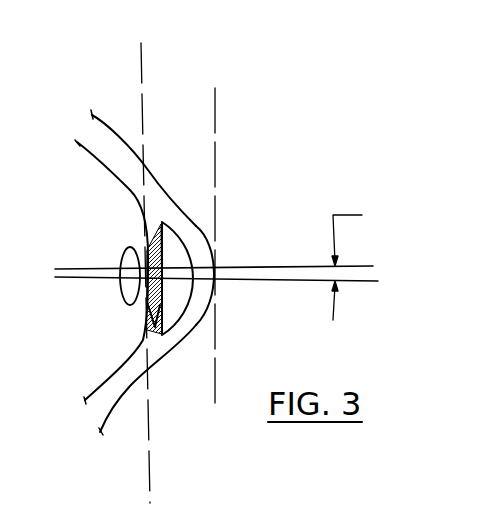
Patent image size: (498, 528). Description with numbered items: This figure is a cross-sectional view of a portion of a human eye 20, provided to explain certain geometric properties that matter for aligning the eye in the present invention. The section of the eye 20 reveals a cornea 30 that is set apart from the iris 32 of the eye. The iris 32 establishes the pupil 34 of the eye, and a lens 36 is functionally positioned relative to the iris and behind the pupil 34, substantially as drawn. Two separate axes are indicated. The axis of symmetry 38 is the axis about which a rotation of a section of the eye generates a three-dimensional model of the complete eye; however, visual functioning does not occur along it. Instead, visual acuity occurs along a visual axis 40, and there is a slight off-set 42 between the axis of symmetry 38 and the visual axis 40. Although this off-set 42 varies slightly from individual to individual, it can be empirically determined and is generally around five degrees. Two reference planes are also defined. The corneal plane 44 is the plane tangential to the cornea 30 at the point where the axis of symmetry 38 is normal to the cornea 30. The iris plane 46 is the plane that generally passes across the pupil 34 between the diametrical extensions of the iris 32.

The eye 20 is at (168, 272).
The cornea 30 is at (201, 308).
The iris 32 is at (148, 328).
The pupil 34 is at (147, 251).
The lens 36 is at (128, 292).
The axis of symmetry 38 is at (313, 281).
The visual axis 40 is at (315, 266).
The off-set 42 is at (365, 263).
The corneal plane 44 is at (216, 108).
The iris plane 46 is at (140, 54).